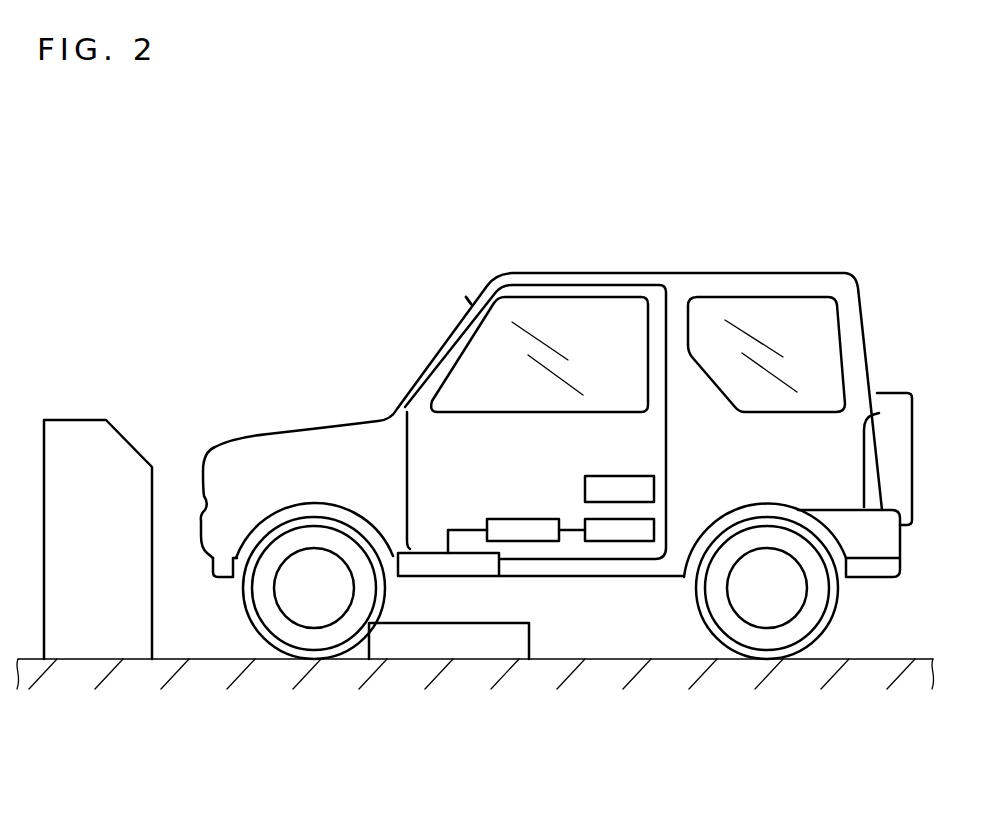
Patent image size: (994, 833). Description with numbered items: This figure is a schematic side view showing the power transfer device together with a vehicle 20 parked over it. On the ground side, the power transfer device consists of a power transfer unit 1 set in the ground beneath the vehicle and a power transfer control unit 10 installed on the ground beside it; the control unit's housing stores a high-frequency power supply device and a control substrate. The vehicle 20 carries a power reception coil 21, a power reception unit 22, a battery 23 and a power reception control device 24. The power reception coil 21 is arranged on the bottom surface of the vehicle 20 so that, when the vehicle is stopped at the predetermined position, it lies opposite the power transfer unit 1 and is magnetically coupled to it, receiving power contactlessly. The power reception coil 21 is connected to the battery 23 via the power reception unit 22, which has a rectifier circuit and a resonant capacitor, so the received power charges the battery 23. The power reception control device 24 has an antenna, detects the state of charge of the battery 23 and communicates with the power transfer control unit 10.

The power transfer unit 1 is at (403, 647).
The power transfer control unit 10 is at (77, 420).
The vehicle 20 is at (556, 458).
The power reception coil 21 is at (467, 565).
The power reception unit 22 is at (535, 534).
The battery 23 is at (605, 534).
The power reception control device 24 is at (648, 489).